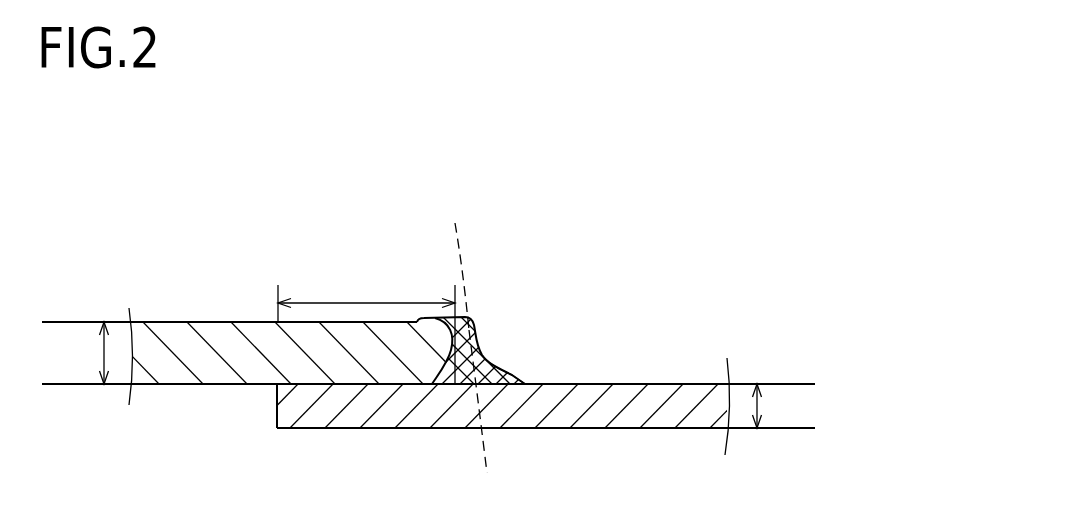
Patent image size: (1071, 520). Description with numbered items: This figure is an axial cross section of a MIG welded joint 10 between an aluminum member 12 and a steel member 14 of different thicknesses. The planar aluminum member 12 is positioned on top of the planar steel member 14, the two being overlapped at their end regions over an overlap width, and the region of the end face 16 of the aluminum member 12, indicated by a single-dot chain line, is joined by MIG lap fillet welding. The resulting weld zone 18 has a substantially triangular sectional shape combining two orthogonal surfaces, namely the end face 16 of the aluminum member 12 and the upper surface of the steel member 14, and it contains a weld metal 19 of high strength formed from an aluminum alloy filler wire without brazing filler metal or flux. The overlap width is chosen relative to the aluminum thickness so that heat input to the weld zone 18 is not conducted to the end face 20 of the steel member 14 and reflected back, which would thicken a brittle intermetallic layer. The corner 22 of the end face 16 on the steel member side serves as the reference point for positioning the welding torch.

The MIG welded joint 10 is at (672, 252).
The aluminum member 12 is at (195, 305).
The steel member 14 is at (563, 443).
The end face 16 is at (448, 268).
The weld zone 18 is at (518, 315).
The weld metal 19 is at (490, 370).
The end face 20 is at (278, 408).
The corner 22 is at (484, 416).